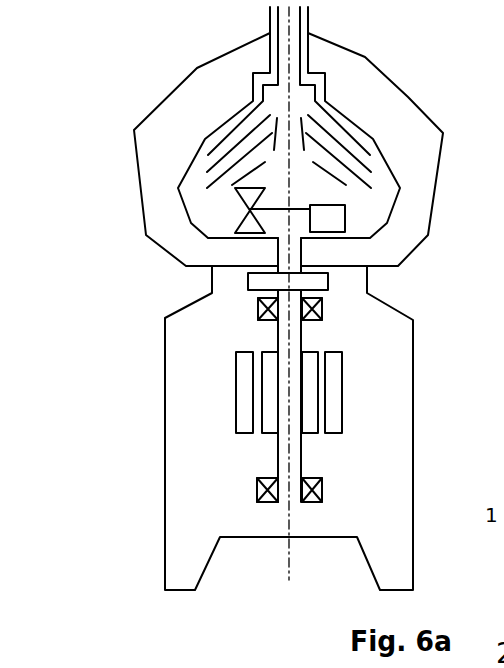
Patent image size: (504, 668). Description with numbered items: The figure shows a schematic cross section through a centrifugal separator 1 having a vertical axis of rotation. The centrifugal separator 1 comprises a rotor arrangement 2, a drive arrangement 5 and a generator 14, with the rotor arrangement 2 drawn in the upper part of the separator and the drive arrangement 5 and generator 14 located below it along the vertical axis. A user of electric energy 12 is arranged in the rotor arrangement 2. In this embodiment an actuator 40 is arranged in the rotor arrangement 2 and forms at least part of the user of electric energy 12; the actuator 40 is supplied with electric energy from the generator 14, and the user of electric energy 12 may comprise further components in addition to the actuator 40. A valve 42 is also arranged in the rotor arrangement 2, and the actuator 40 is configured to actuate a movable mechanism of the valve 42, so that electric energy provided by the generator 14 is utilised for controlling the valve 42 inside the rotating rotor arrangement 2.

The centrifugal separator 1 is at (101, 114).
The rotor arrangement 2 is at (205, 139).
The drive arrangement 5 is at (247, 390).
The user of electric energy 12 is at (382, 200).
The generator 14 is at (313, 283).
The actuator 40 is at (318, 216).
The valve 42 is at (250, 213).